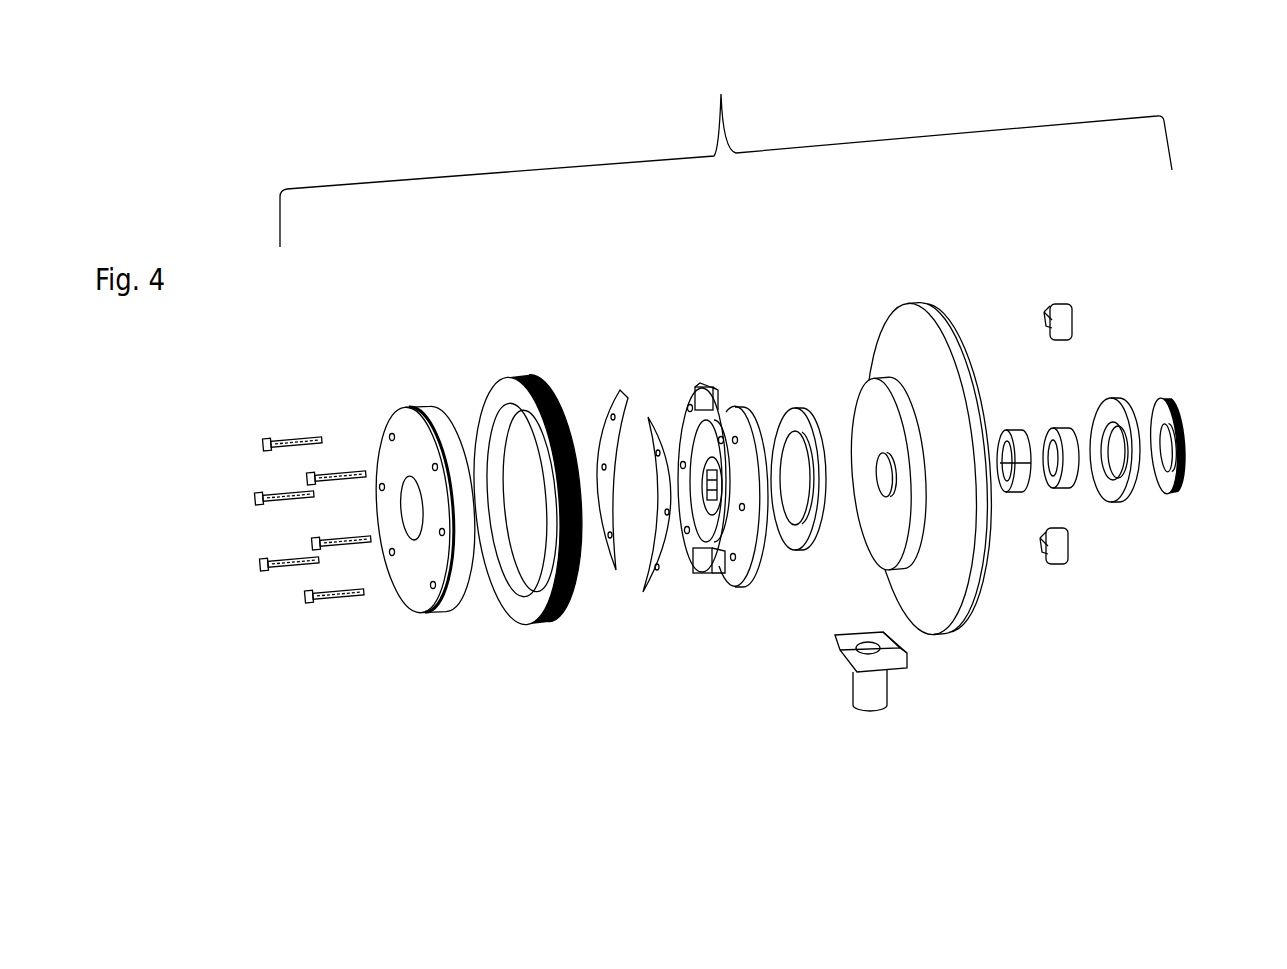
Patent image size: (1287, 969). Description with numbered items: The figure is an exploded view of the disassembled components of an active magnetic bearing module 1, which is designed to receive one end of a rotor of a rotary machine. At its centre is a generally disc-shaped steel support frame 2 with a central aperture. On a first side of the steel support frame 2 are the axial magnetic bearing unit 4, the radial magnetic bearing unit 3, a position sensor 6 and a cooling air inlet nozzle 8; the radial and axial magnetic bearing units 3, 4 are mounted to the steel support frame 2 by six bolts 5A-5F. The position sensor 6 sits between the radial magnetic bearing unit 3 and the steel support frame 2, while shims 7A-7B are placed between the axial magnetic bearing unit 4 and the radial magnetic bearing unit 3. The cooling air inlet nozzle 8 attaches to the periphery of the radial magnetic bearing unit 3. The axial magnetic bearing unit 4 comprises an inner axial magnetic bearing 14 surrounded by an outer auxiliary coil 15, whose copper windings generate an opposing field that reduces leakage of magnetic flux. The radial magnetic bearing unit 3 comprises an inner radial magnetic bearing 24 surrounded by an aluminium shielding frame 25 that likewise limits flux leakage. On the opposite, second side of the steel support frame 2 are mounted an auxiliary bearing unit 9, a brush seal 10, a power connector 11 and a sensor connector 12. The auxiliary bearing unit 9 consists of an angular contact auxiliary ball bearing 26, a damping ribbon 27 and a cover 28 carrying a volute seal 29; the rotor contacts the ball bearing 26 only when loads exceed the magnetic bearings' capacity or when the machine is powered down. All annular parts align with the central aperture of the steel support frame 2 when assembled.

The active magnetic bearing module 1 is at (726, 143).
The steel support frame 2 is at (881, 314).
The radial magnetic bearing unit 3 is at (728, 483).
The axial magnetic bearing unit 4 is at (465, 534).
The bolts 5A-5F is at (290, 665).
The position sensor 6 is at (800, 550).
The shims 7A-7B is at (625, 610).
The cooling air inlet nozzle 8 is at (888, 698).
The auxiliary bearing unit 9 is at (1089, 502).
The brush seal 10 is at (1173, 400).
The power connector 11 is at (1073, 313).
The sensor connector 12 is at (1065, 560).
The inner axial magnetic bearing 14 is at (400, 410).
The outer auxiliary coil 15 is at (505, 377).
The inner radial magnetic bearing 24 is at (713, 552).
The aluminium shielding frame 25 is at (740, 585).
The angular contact auxiliary ball bearing 26 is at (1063, 487).
The damping ribbon 27 is at (1010, 493).
The cover 28 is at (1117, 505).
The volute seal 29 is at (1130, 500).